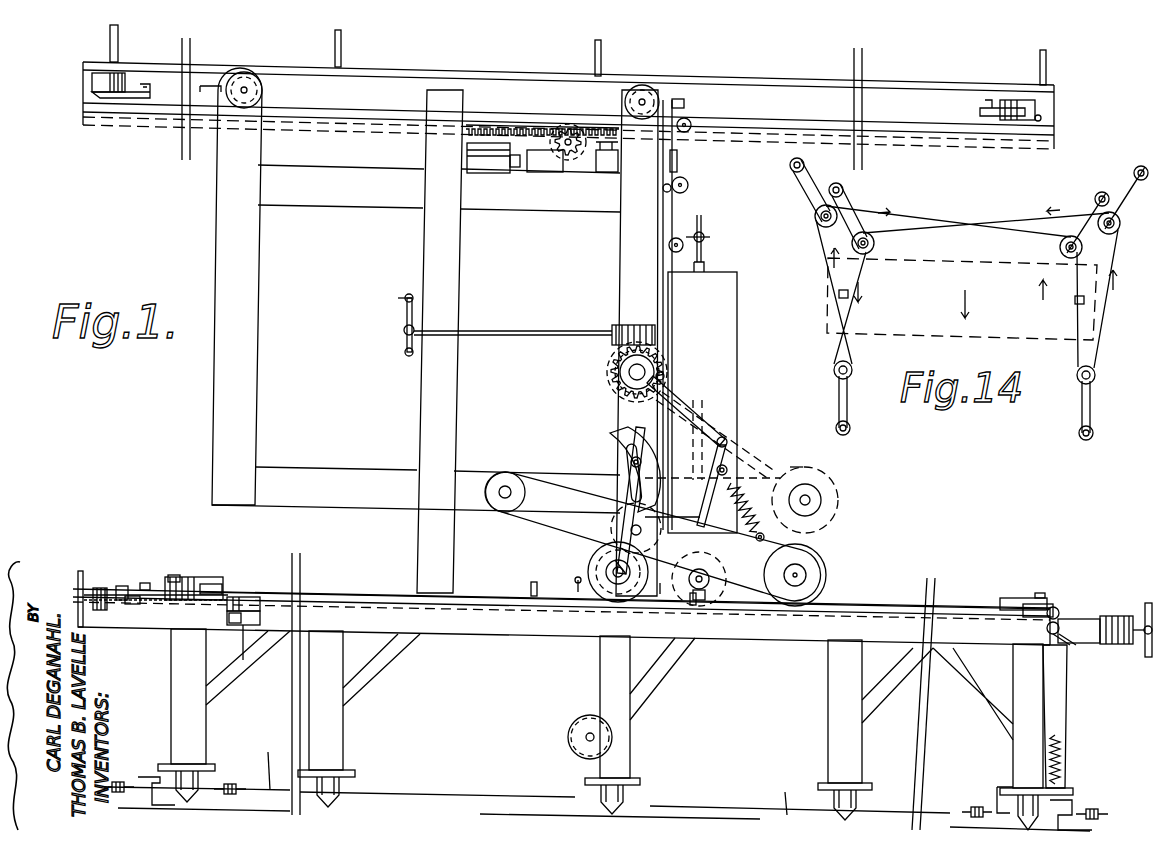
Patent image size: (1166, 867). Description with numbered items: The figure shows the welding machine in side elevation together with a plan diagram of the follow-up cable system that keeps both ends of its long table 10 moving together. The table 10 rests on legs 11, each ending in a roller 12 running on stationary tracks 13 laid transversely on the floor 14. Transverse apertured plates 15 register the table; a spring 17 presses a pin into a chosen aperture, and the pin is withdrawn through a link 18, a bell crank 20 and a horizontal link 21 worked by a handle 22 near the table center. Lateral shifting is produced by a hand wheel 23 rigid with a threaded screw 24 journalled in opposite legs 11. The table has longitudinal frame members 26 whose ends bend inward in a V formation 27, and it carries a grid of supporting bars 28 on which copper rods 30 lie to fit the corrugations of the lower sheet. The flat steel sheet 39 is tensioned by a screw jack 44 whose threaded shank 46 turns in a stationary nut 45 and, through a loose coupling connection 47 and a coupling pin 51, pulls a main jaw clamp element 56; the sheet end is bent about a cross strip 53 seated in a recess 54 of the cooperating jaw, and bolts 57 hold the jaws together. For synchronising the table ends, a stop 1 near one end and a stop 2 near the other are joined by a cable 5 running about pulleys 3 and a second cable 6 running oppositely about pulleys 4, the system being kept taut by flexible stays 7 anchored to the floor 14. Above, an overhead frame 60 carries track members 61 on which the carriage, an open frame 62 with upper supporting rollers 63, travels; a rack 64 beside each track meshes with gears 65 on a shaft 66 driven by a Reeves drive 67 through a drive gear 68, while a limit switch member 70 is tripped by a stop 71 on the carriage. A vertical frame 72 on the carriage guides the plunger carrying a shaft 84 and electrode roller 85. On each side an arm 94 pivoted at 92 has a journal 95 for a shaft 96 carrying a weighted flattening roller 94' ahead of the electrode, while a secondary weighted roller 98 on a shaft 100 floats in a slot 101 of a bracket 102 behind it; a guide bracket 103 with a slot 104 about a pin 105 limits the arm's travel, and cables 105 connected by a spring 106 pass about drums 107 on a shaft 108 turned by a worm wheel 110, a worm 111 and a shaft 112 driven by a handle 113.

In FIG. 14, the stop 1 is at (849, 298).
In FIG. 1, the stop 2 is at (997, 792).
In FIG. 14, the stop 2 is at (1074, 302).
In FIG. 1, the pulleys 3 is at (230, 783).
In FIG. 14, the pulleys 3 is at (875, 247).
In FIG. 1, the pulleys 4 is at (116, 779).
In FIG. 14, the pulleys 4 is at (814, 218).
In FIG. 1, the cable 5 is at (522, 774).
In FIG. 14, the cable 5 is at (926, 224).
In FIG. 14, the second cable 6 is at (818, 242).
In FIG. 14, the flexible hangers or stays 7 is at (810, 185).
In FIG. 1, the table 10 is at (470, 634).
In FIG. 1, the supports or legs 11 is at (830, 674).
In FIG. 1, the roller 12 is at (350, 787).
In FIG. 1, the tracks 13 is at (330, 802).
In FIG. 1, the floor 14 is at (690, 820).
In FIG. 1, the transverse apertured plates 15 is at (150, 782).
In FIG. 1, the spring 17 is at (1064, 762).
In FIG. 1, the link 18 is at (1066, 722).
In FIG. 1, the bell crank 20 is at (1057, 622).
In FIG. 1, the horizontal link 21 is at (1030, 616).
In FIG. 1, the handle 22 is at (540, 587).
In FIG. 1, the hand wheel 23 is at (568, 733).
In FIG. 1, the threaded shaft or screw 24 is at (586, 738).
In FIG. 1, the longitudinal frame members 26 is at (780, 642).
In FIG. 1, the V formation 27 is at (1145, 614).
In FIG. 1, the supporting plates or bars 28 is at (243, 660).
In FIG. 1, the rods 30 is at (258, 620).
In FIG. 1, the sheet of steel 39 is at (258, 597).
In FIG. 1, the screw jack 44 is at (1085, 644).
In FIG. 1, the nut 45 is at (82, 571).
In FIG. 1, the threaded shank 46 is at (100, 587).
In FIG. 1, the loose coupling connection 47 is at (120, 601).
In FIG. 1, the coupling pin 51 is at (143, 582).
In FIG. 1, the cross strip 53 is at (200, 577).
In FIG. 1, the recess 54 is at (226, 582).
In FIG. 1, the main jaw clamp element 56 is at (160, 610).
In FIG. 1, the bolts 57 is at (172, 574).
In FIG. 1, the overhead frame 60 is at (119, 51).
In FIG. 1, the track members 61 is at (90, 66).
In FIG. 1, the open frame 62 is at (256, 283).
In FIG. 1, the upper supporting rollers 63 is at (250, 72).
In FIG. 1, the rack 64 is at (505, 125).
In FIG. 1, the gears 65 is at (575, 132).
In FIG. 1, the shaft 66 is at (600, 172).
In FIG. 1, the Reeves drive 67 is at (503, 174).
In FIG. 1, the drive gear 68 is at (545, 173).
In FIG. 1, the limit switch member 70 is at (982, 112).
In FIG. 1, the stop 71 is at (684, 100).
In FIG. 1, the vertical frame 72 is at (712, 374).
In FIG. 1, the shaft 84 is at (705, 600).
In FIG. 1, the electrode roller 85 is at (700, 607).
In FIG. 1, the pivot 92 is at (500, 486).
In FIG. 1, the arm 94 is at (653, 527).
In FIG. 1, the primary weighted roller 94' is at (823, 523).
In FIG. 1, the journal 95 is at (818, 538).
In FIG. 1, the shaft 96 is at (822, 498).
In FIG. 1, the secondary rearward weighted roller 98 is at (590, 566).
In FIG. 1, the shaft 100 is at (612, 560).
In FIG. 1, the slot 101 is at (628, 540).
In FIG. 1, the bracket 102 is at (622, 580).
In FIG. 1, the guide bracket 103 is at (620, 450).
In FIG. 1, the slot 104 is at (630, 473).
In FIG. 1, the pin and cables 105 is at (724, 434).
In FIG. 1, the spring 106 is at (738, 482).
In FIG. 1, the drums 107 is at (628, 373).
In FIG. 1, the shaft 108 is at (664, 373).
In FIG. 1, the worm wheel 110 is at (612, 362).
In FIG. 1, the worm 111 is at (636, 323).
In FIG. 1, the shaft 112 is at (500, 324).
In FIG. 1, the handle 113 is at (400, 305).